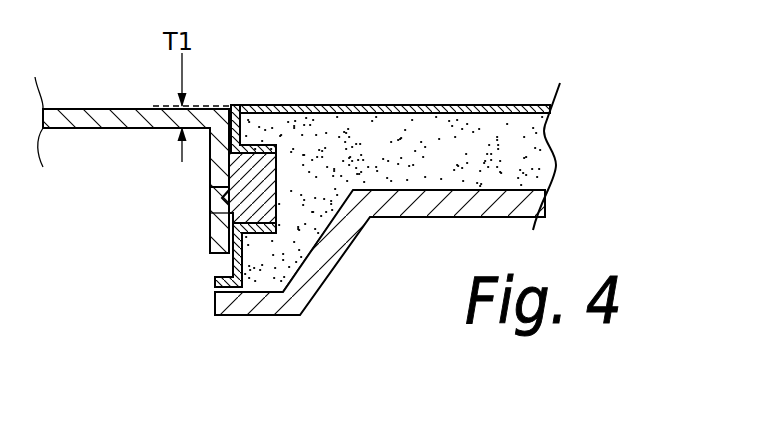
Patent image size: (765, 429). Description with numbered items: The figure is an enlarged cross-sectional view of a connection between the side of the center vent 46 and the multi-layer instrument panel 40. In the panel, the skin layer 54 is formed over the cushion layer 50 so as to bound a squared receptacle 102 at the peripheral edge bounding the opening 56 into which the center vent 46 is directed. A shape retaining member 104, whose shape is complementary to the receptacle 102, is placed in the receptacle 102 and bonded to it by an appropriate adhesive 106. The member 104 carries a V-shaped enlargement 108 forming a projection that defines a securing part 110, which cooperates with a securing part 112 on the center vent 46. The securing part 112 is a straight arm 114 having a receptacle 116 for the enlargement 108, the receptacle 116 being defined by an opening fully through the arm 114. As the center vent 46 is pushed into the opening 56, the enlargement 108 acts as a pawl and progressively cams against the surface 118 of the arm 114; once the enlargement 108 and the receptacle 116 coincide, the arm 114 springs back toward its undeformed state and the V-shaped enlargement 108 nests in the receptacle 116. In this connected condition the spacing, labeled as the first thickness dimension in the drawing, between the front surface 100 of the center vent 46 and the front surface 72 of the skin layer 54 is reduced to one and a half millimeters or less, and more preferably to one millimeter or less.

The instrument panel 40 is at (562, 157).
The center vent 46 is at (108, 108).
The cushion layer 50 is at (545, 128).
The skin layer 54 is at (453, 104).
The opening 56 is at (222, 270).
The front surface of the skin layer 72 is at (415, 105).
The front surface of the center vent 100 is at (70, 108).
The squared receptacle 102 is at (212, 248).
The shape retaining member 104 is at (258, 137).
The adhesive 106 is at (270, 210).
The V-shaped enlargement 108 is at (210, 228).
The securing part 110 is at (208, 207).
The securing part 112 is at (212, 262).
The straight arm 114 is at (210, 165).
The receptacle 116 is at (210, 184).
The surface of the arm 118 is at (257, 107).